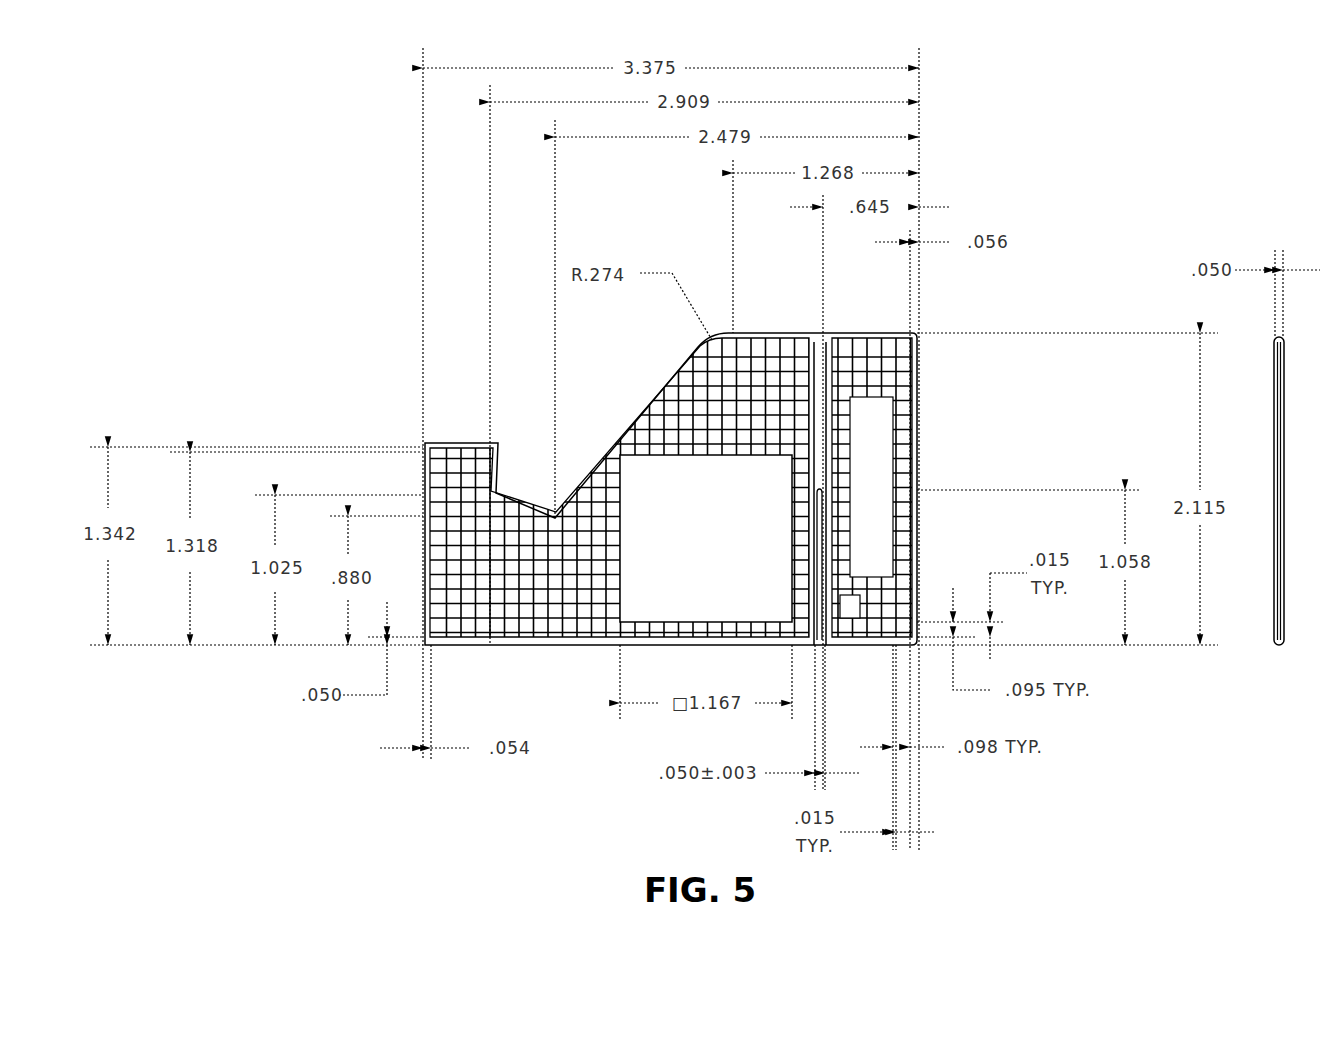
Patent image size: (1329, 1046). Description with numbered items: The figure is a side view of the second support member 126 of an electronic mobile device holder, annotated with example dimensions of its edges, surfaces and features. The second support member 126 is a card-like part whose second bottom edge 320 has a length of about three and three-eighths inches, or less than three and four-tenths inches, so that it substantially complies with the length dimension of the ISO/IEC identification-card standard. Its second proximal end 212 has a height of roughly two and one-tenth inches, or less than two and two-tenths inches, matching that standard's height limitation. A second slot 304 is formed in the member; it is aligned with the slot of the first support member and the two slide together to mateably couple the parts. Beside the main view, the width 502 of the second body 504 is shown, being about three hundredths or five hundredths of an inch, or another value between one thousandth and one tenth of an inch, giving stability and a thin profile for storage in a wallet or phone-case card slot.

The second support member 126 is at (490, 622).
The second body 504 is at (522, 622).
The second bottom edge 320 is at (588, 652).
The second slot 304 is at (811, 657).
The second proximal end 212 is at (925, 438).
The width 502 is at (1279, 672).